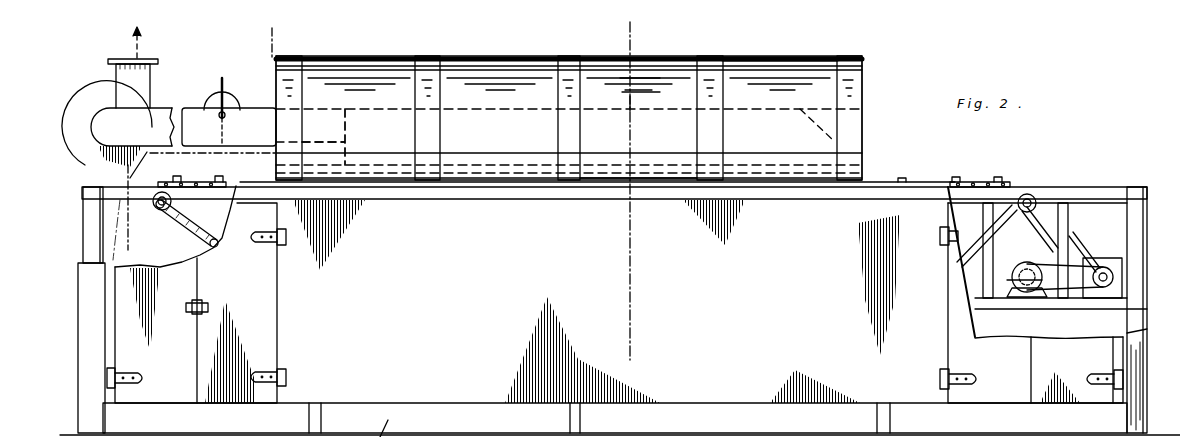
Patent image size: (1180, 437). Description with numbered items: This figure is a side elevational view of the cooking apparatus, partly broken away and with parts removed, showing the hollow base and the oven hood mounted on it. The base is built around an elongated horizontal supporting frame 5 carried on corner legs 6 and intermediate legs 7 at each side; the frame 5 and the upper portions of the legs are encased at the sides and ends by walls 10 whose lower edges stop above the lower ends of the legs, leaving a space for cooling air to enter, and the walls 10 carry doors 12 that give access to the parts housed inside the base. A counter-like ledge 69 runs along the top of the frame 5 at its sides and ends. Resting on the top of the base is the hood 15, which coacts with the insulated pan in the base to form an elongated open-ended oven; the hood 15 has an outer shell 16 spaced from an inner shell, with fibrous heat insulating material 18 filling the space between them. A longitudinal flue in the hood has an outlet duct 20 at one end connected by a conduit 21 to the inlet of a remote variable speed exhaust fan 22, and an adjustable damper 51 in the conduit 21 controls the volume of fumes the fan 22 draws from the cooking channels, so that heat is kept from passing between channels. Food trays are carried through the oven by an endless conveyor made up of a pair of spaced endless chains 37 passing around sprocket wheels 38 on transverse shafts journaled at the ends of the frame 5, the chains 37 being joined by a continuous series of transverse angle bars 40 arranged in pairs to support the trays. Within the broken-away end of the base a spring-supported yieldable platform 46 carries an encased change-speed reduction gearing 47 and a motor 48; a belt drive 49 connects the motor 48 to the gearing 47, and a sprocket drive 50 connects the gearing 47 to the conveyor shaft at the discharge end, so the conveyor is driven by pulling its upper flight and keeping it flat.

The supporting frame 5 is at (624, 40).
The corner legs 6 is at (90, 240).
The intermediate legs 7 is at (269, 41).
The walls 10 is at (470, 378).
The doors 12 is at (181, 390).
The hood 15 is at (762, 62).
The outer shell 16 is at (503, 78).
The fibrous heat insulating material 18 is at (642, 108).
The outlet duct 20 is at (322, 112).
The conduit 21 is at (247, 113).
The exhaust fan 22 is at (63, 127).
The endless chains 37 is at (170, 236).
The sprocket wheels 38 is at (180, 207).
The transverse angle bars 40 is at (219, 181).
The yieldable platform 46 is at (1030, 305).
The change-speed reduction gearing 47 is at (1104, 265).
The motor 48 is at (1010, 275).
The belt drive 49 is at (1040, 266).
The sprocket drive 50 is at (1082, 240).
The adjustable damper 51 is at (218, 128).
The counter-like ledge 69 is at (665, 180).